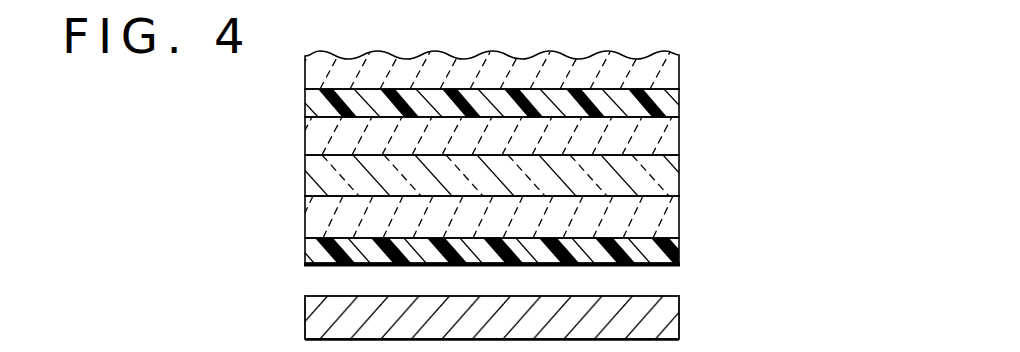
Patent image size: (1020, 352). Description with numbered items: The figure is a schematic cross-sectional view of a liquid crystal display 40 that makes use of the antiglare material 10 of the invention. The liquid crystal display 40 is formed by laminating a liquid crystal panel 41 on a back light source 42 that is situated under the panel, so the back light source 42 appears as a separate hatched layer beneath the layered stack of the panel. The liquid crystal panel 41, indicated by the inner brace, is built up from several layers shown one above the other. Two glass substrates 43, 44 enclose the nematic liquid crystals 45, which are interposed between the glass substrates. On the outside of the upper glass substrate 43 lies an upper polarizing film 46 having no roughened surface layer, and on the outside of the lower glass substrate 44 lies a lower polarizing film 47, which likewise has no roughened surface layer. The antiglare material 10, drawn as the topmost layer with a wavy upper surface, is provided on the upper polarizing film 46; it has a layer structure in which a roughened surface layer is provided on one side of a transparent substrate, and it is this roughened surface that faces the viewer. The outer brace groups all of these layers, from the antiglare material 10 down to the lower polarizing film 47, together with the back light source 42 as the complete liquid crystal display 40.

The antiglare material 10 is at (678, 75).
The liquid crystal display 40 is at (605, 156).
The liquid crystal panel 41 is at (576, 155).
The back light source 42 is at (678, 318).
The glass substrate 43 is at (678, 146).
The glass substrate 44 is at (680, 222).
The nematic liquid crystals 45 is at (680, 185).
The upper polarizing film 46 is at (681, 106).
The lower polarizing film 47 is at (545, 253).